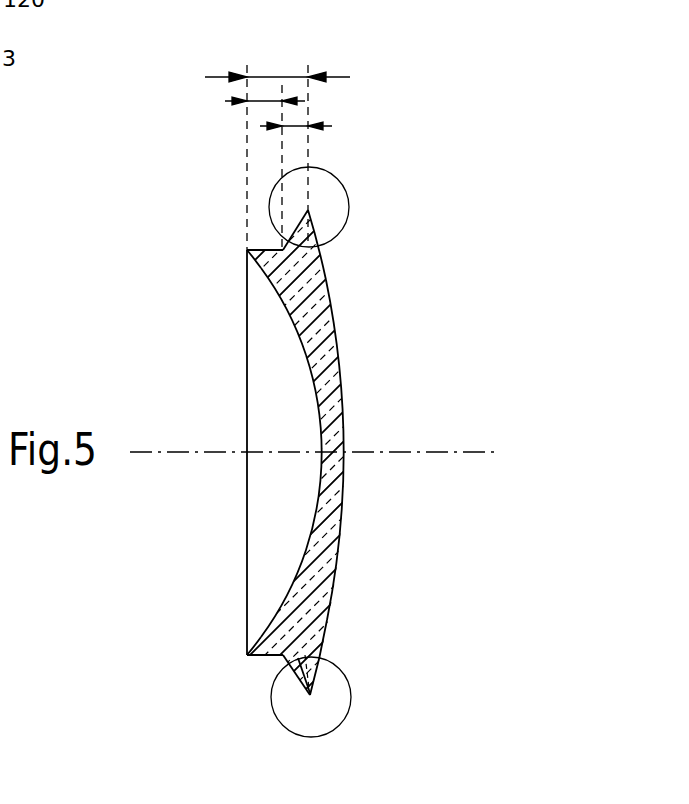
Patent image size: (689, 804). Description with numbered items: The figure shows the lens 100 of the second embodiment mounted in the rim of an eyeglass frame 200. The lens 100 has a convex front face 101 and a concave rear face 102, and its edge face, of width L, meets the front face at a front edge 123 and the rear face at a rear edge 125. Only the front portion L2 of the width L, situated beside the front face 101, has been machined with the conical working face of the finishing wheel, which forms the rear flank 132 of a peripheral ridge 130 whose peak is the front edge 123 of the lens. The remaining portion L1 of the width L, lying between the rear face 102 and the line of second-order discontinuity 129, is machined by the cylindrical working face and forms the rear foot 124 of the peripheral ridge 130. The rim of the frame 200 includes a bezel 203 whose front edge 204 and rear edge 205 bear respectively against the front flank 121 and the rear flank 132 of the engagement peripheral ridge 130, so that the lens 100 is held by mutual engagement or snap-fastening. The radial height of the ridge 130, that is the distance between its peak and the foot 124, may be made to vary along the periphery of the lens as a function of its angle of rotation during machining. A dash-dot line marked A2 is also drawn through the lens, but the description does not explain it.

The ophthalmic lens 100 is at (287, 477).
The convex front face 101 is at (342, 386).
The concave rear face 102 is at (305, 363).
The front flank of the engagement peripheral ridge 121 is at (318, 262).
The front edge of the lens 123 is at (320, 697).
The upper flat edge surface 124 is at (247, 251).
The rear edge of the lens 125 is at (247, 655).
The line of second-order discontinuity 129 is at (281, 249).
The peripheral ridge 130 is at (313, 611).
The rear flank of the peripheral ridge 132 is at (272, 288).
The frame 200 is at (356, 192).
The bezel 203 is at (328, 226).
The front edge of the bezel 204 is at (315, 676).
The rear edge of the bezel 205 is at (292, 680).
The width of the edge face L is at (269, 77).
The remaining portion of the edge face width L1 is at (250, 102).
The front portion of the edge face width L2 is at (300, 126).
The optical axis A2 is at (463, 455).